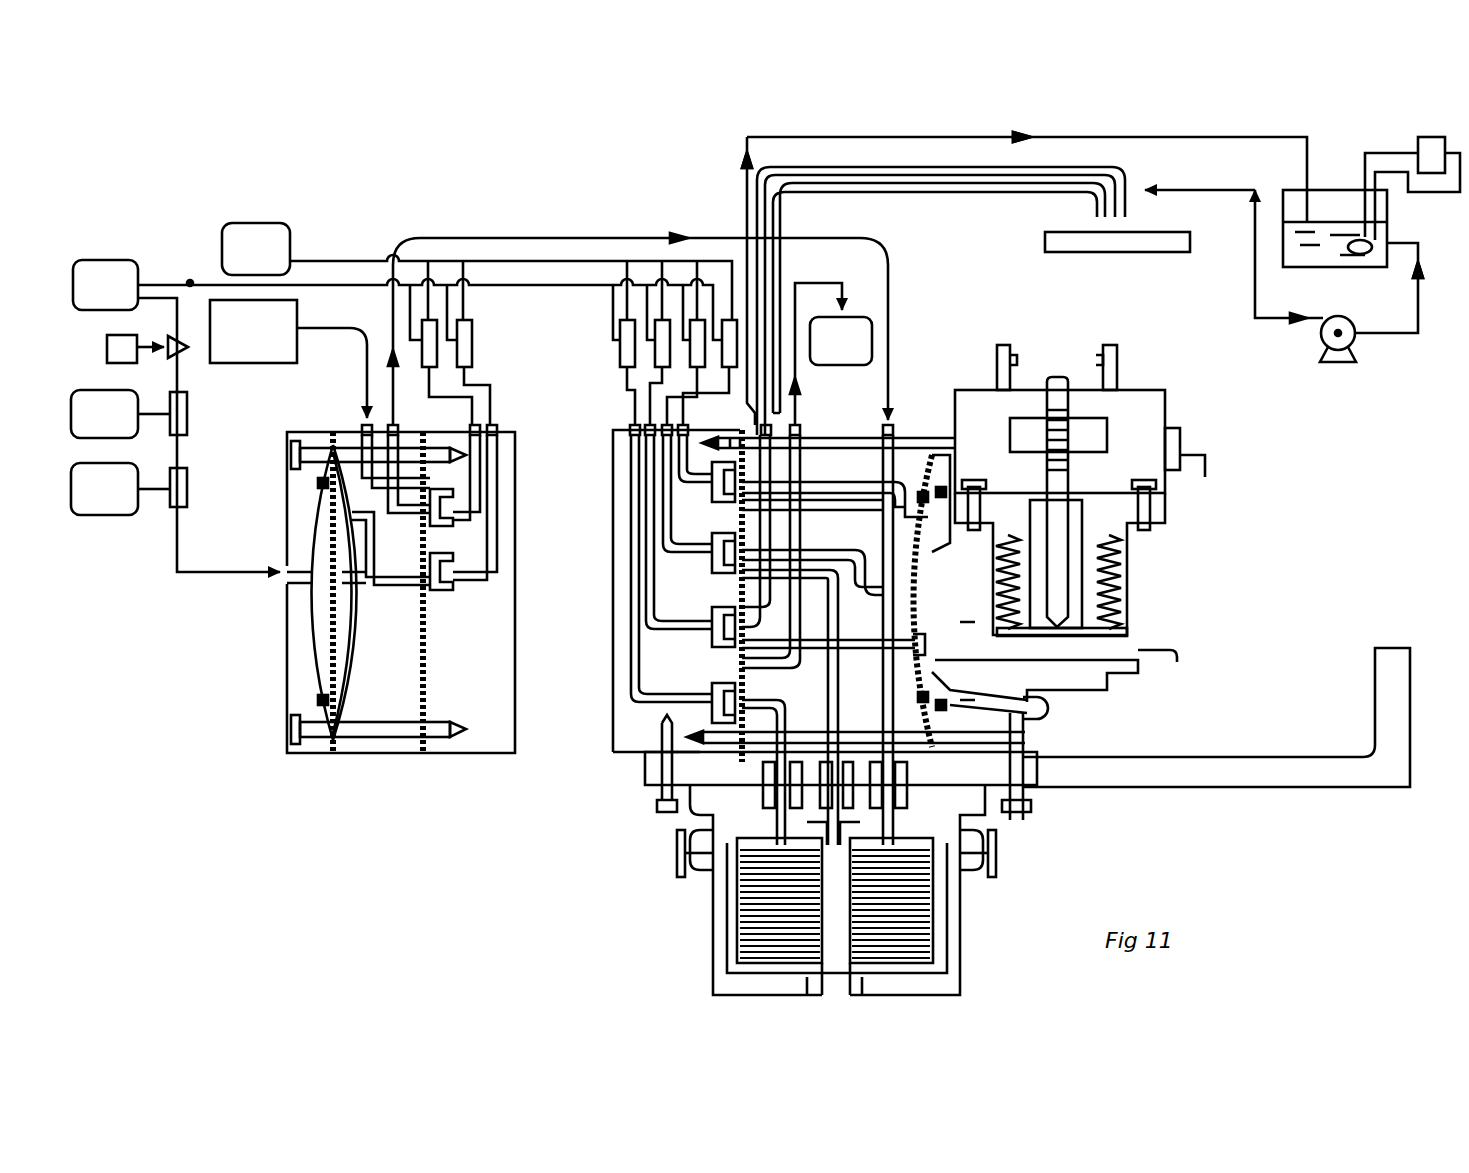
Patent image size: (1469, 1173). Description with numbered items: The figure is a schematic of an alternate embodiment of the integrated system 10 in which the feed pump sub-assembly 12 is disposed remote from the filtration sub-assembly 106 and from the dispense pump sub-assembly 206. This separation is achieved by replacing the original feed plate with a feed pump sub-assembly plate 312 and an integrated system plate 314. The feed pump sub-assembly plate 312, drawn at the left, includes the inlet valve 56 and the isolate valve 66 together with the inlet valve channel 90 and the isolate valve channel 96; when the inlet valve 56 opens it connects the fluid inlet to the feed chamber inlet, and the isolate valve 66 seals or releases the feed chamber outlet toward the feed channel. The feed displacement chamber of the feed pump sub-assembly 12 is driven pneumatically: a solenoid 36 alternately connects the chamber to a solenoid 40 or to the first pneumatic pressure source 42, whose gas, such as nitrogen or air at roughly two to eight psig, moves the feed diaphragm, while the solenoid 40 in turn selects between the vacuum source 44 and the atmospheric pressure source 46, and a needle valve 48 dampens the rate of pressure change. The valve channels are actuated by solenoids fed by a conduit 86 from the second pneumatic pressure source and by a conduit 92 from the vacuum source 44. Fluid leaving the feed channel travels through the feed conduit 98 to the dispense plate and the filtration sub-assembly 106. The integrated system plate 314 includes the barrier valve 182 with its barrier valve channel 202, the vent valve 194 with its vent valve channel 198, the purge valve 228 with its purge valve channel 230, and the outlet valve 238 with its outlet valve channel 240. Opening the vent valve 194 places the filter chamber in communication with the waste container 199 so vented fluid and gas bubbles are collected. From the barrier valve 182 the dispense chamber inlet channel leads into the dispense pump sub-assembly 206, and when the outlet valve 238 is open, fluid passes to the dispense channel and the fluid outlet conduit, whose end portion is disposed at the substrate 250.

The integrated system 10 is at (318, 200).
The feed pump sub-assembly 12 is at (355, 757).
The solenoid 36 is at (187, 489).
The solenoid 40 is at (187, 414).
The first pneumatic pressure source 42 is at (122, 503).
The vacuum source 44 is at (122, 298).
The atmospheric pressure source 46 is at (122, 428).
The needle valve 48 is at (107, 347).
The inlet valve 56 is at (448, 590).
The isolate valve 66 is at (424, 516).
The conduit 86 is at (515, 260).
The inlet valve channel 90 is at (492, 522).
The conduit 92 is at (190, 281).
The isolate valve channel 96 is at (482, 462).
The feed conduit 98 is at (555, 236).
The filtration sub-assembly 106 is at (1068, 808).
The barrier valve 182 is at (717, 556).
The vent valve 194 is at (712, 700).
The vent valve channel 198 is at (630, 644).
The waste container 199 is at (859, 352).
The barrier valve channel 202 is at (663, 497).
The dispense pump sub-assembly 206 is at (945, 372).
The purge valve 228 is at (717, 486).
The purge valve channel 230 is at (663, 452).
The outlet valve 238 is at (713, 629).
The outlet valve channel 240 is at (647, 610).
The substrate 250 is at (1145, 252).
The feed pump sub-assembly plate 312 is at (515, 667).
The integrated system plate 314 is at (605, 708).